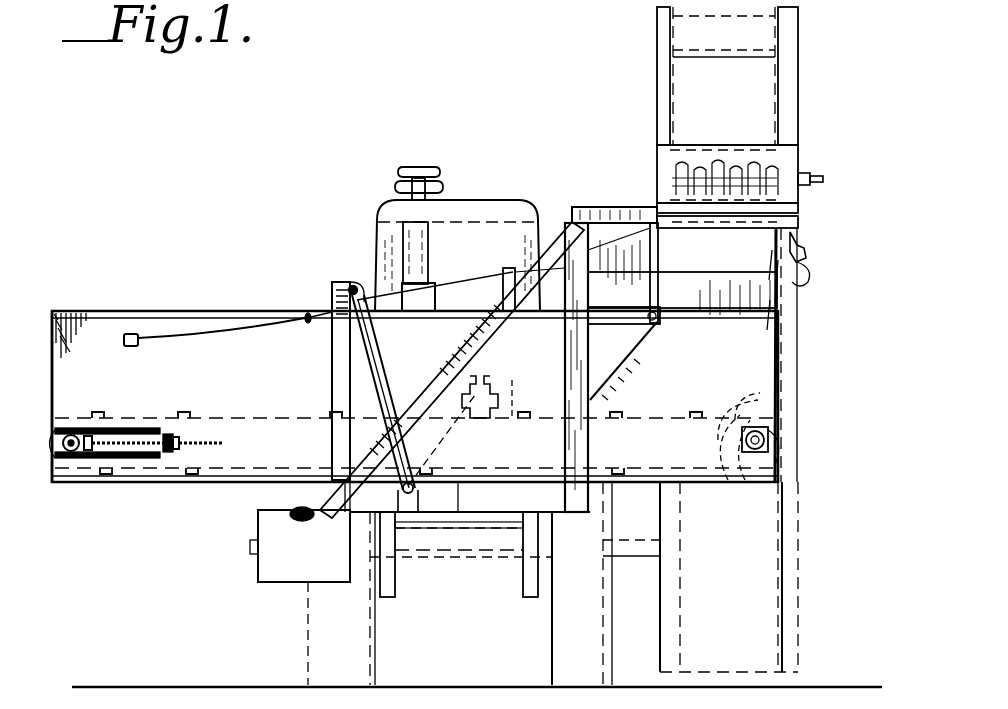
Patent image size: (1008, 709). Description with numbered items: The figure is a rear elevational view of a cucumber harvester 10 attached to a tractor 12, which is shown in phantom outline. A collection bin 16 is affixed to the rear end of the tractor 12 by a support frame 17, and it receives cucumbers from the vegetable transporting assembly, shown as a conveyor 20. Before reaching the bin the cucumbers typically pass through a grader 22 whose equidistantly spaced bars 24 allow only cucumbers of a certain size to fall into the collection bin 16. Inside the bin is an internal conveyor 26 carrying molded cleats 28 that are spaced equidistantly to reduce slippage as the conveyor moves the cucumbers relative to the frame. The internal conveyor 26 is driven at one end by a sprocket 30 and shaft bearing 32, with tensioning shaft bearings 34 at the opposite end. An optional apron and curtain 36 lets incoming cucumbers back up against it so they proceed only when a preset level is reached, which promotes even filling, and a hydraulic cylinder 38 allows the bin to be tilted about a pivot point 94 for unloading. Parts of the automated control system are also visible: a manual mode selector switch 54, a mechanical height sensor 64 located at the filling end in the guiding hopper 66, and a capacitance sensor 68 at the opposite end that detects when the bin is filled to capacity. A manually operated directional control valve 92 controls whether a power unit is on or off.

The cucumber harvester 10 is at (227, 269).
The tractor 12 is at (495, 215).
The collection bin 16 is at (70, 311).
The support frame 17 is at (525, 582).
The conveyor 20 is at (748, 40).
The grader 22 is at (823, 179).
The bars 24 is at (797, 151).
The internal conveyor 26 is at (742, 400).
The cleats 28 is at (700, 406).
The sprocket 30 is at (797, 412).
The shaft bearing 32 is at (768, 446).
The tensioning shaft bearings 34 is at (82, 458).
The apron and curtain 36 is at (512, 380).
The hydraulic cylinder 38 is at (332, 310).
The manual mode selector switch 54 is at (410, 292).
The mechanical height sensor 64 is at (803, 244).
The guiding hopper 66 is at (752, 292).
The capacitance sensor 68 is at (131, 334).
The manually operated directional control valve 92 is at (488, 414).
The pivot point 94 is at (656, 316).